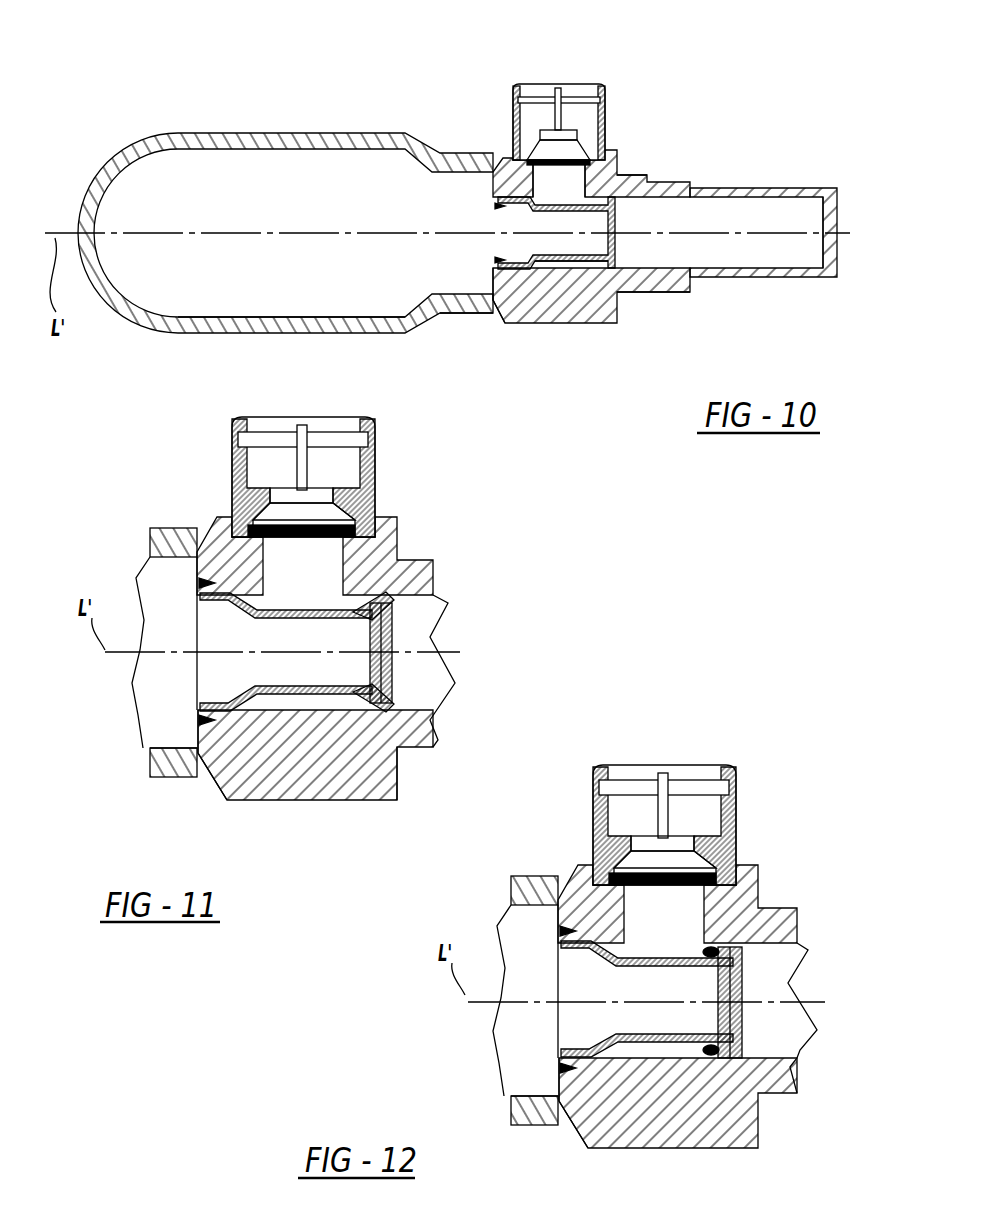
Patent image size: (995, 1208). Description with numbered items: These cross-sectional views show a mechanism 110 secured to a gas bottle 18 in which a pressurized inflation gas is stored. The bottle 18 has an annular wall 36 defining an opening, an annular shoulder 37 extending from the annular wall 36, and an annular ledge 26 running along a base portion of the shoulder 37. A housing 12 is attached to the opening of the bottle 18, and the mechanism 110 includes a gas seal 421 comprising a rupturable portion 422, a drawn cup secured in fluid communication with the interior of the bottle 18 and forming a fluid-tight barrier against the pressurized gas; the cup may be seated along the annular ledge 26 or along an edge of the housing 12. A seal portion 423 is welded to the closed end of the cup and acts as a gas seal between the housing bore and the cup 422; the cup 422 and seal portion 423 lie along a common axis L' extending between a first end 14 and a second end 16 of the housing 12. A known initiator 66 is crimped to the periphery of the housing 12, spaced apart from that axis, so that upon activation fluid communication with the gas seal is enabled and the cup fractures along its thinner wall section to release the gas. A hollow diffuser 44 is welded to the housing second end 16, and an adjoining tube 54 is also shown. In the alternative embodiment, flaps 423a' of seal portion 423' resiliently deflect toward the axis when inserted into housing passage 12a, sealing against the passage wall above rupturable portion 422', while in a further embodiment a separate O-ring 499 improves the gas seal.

In FIG. 10, the gas bottle 18 is at (222, 133).
In FIG. 11, the gas bottle 18 is at (169, 526).
In FIG. 12, the gas bottle 18 is at (530, 874).
In FIG. 10, the annular wall 36 is at (250, 333).
In FIG. 10, the initiator 66 is at (562, 82).
In FIG. 11, the initiator 66 is at (301, 415).
In FIG. 12, the initiator 66 is at (664, 807).
In FIG. 10, the seal portion 423 is at (596, 174).
In FIG. 10, the outlet tube 54 is at (717, 190).
In FIG. 10, the hollow diffuser 44 is at (838, 188).
In FIG. 10, the second end 16 is at (612, 299).
In FIG. 11, the second end 16 is at (383, 768).
In FIG. 10, the housing 12 is at (615, 325).
In FIG. 11, the housing 12 is at (403, 803).
In FIG. 12, the housing 12 is at (760, 1148).
In FIG. 10, the gas seal 421 is at (552, 268).
In FIG. 10, the mechanism 110 is at (527, 340).
In FIG. 11, the mechanism 110 is at (416, 532).
In FIG. 12, the mechanism 110 is at (777, 880).
In FIG. 10, the first end 14 is at (513, 315).
In FIG. 11, the first end 14 is at (232, 778).
In FIG. 12, the first end 14 is at (594, 1128).
In FIG. 10, the annular shoulder 37 is at (510, 303).
In FIG. 11, the annular shoulder 37 is at (198, 752).
In FIG. 12, the annular shoulder 37 is at (560, 1098).
In FIG. 10, the annular ledge 26 is at (480, 295).
In FIG. 11, the annular ledge 26 is at (198, 752).
In FIG. 12, the annular ledge 26 is at (558, 1097).
In FIG. 11, the seal portion 423' is at (374, 648).
In FIG. 11, the flaps 423a' is at (430, 567).
In FIG. 11, the rupturable portion 422' is at (297, 767).
In FIG. 11, the housing passage 12a is at (427, 692).
In FIG. 12, the rupturable portion 422 is at (651, 1061).
In FIG. 12, the O-ring 499 is at (740, 948).